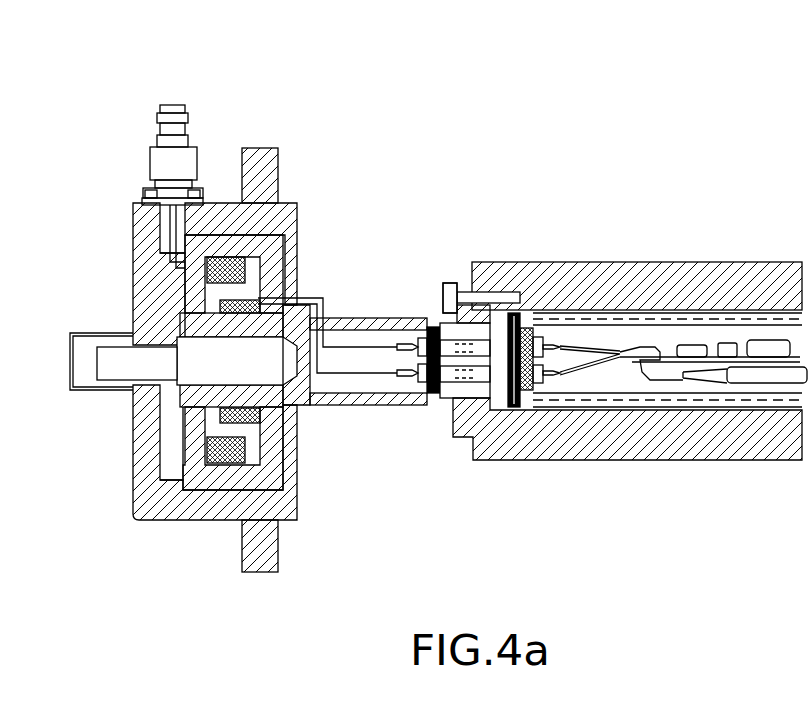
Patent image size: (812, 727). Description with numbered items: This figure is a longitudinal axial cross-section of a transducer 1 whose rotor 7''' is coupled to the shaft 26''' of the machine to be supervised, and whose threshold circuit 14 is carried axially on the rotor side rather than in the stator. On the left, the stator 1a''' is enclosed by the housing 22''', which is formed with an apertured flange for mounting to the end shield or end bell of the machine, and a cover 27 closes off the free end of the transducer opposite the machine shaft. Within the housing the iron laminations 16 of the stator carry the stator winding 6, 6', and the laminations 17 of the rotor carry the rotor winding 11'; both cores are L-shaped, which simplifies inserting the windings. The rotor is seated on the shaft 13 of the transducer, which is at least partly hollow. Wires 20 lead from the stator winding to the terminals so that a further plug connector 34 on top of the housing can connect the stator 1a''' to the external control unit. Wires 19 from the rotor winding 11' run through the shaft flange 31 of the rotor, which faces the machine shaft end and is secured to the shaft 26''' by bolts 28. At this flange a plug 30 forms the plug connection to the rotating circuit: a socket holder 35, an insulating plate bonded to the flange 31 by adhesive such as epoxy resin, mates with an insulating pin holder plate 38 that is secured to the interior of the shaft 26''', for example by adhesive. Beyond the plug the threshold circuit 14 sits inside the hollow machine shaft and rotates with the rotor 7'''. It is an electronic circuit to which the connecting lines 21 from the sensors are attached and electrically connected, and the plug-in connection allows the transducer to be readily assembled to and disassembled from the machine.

The transducer 1 is at (357, 373).
The stator 1a''' is at (284, 217).
The stator winding 6 is at (187, 489).
The stator winding 6' is at (141, 258).
The rotor 7''' is at (203, 383).
The rotor winding 11' is at (222, 364).
The shaft 13 is at (110, 364).
The threshold circuit 14 is at (738, 357).
The stator laminations 16 is at (279, 237).
The rotor laminations 17 is at (284, 257).
The wires 19 is at (316, 300).
The wires 20 is at (172, 225).
The connecting lines 21 is at (753, 380).
The housing 22''' is at (283, 135).
The shaft of the machine 26''' is at (627, 338).
The cover 27 is at (147, 473).
The bolts 28 is at (443, 295).
The plug 30 is at (453, 283).
The shaft flange 31 is at (370, 325).
The plug connector 34 is at (183, 160).
The socket holder 35 is at (430, 398).
The pin holder plate 38 is at (515, 410).